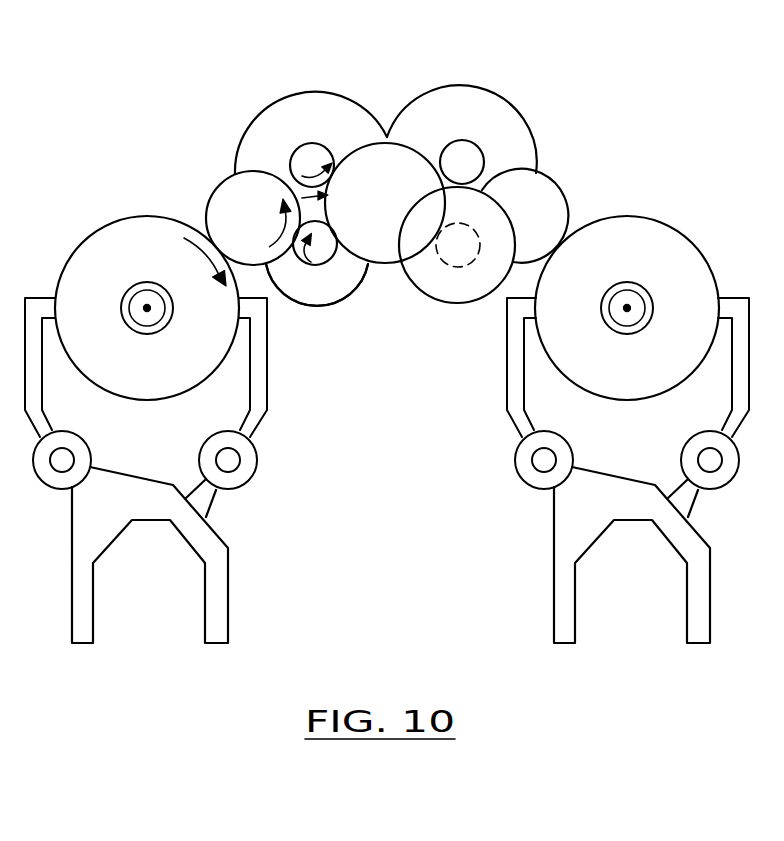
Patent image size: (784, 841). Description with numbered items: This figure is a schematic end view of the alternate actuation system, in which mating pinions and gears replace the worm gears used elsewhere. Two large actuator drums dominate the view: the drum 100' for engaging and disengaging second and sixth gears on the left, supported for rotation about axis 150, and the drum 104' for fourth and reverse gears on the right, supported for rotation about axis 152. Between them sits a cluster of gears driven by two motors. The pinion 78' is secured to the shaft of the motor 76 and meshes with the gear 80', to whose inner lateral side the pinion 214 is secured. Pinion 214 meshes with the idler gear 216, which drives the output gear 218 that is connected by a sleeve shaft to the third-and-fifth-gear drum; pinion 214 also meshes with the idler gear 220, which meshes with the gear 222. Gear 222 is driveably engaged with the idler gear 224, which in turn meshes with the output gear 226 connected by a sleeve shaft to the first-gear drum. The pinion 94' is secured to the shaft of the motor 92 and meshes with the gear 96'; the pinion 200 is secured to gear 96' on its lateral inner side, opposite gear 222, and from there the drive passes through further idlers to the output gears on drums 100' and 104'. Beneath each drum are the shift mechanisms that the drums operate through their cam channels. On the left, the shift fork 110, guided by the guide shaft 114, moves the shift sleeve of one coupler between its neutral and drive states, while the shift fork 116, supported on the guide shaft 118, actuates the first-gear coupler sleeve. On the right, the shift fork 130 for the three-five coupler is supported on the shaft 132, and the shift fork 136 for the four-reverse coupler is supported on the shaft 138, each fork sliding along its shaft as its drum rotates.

The actuator drum 100' is at (129, 264).
The actuator drum 104' is at (653, 264).
The output gear 226 is at (138, 213).
The output gear 218 is at (615, 213).
The axis 150 is at (147, 308).
The axis 152 is at (627, 308).
The motor 92 is at (308, 105).
The motor 76 is at (465, 107).
The pinion 94' is at (284, 115).
The pinion 78' is at (491, 114).
The idler gear 224 is at (217, 183).
The idler gear 220 is at (385, 157).
The idler gear 216 is at (553, 180).
The gear 222 is at (337, 253).
The pinion 200 is at (320, 267).
The gear 96' is at (317, 335).
The gear 80' is at (457, 296).
The pinion 214 is at (456, 270).
The guide shaft 114 is at (74, 460).
The guide shaft 118 is at (231, 462).
The shift fork 116 is at (207, 503).
The shift fork 110 is at (93, 503).
The shaft 138 is at (547, 462).
The shaft 132 is at (712, 460).
The shift fork 130 is at (683, 502).
The shift fork 136 is at (572, 516).